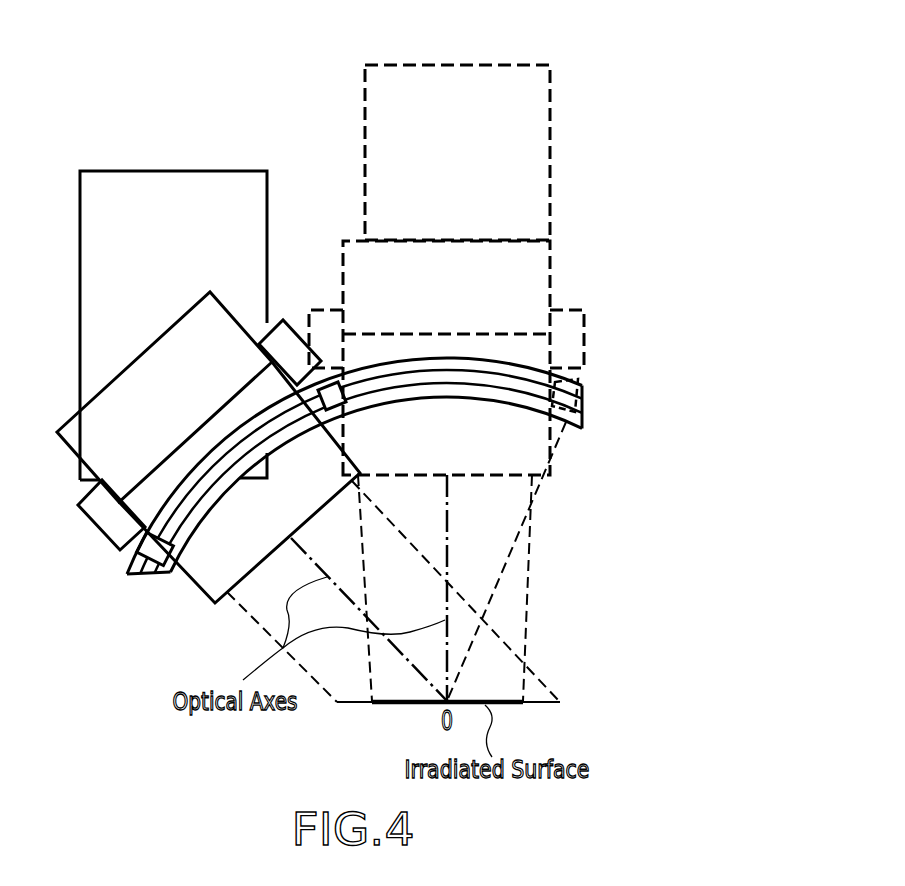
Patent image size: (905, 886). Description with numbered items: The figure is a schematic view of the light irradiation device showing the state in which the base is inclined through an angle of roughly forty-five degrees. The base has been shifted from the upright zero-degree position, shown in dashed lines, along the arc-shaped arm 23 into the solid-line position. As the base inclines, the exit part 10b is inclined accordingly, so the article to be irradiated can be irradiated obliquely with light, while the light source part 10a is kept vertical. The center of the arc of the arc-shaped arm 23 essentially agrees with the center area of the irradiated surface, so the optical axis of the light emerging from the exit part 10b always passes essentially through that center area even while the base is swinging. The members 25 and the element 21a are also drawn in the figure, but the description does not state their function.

The light source part 10a is at (240, 171).
The exit part 10b is at (67, 420).
The guide engaging members 25 is at (92, 522).
The slider engaging arcuate guide 21a is at (140, 551).
The arc-shaped arm 23 is at (148, 574).